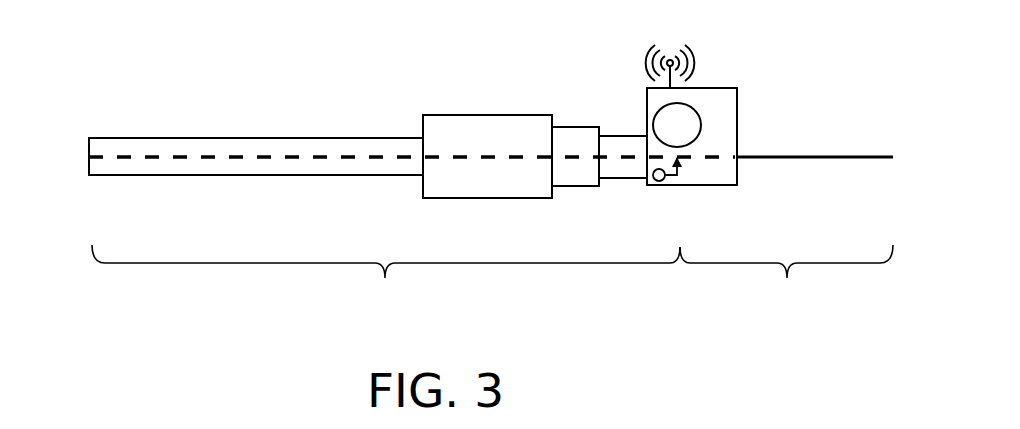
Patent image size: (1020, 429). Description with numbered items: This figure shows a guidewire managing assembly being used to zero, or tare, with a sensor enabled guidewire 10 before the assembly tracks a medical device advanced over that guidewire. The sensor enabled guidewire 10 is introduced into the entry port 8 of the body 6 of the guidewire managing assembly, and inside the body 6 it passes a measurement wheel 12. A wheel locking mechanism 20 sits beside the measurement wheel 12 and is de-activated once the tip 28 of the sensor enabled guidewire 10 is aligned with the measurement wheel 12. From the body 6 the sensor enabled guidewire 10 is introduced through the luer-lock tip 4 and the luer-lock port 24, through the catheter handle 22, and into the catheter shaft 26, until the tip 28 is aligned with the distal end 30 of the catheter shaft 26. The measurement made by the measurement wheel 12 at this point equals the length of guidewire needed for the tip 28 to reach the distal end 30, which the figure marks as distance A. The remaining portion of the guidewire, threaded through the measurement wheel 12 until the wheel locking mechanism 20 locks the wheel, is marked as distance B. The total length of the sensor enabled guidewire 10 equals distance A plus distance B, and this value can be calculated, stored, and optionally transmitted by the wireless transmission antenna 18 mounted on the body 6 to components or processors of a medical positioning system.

The luer-lock tip 4 is at (625, 178).
The body 6 is at (720, 88).
The entry port 8 is at (740, 153).
The sensor enabled guidewire 10 is at (248, 157).
The measurement wheel 12 is at (697, 125).
The wireless transmission antenna 18 is at (670, 55).
The wheel locking mechanism 20 is at (682, 170).
The catheter handle 22 is at (503, 198).
The luer-lock port 24 is at (582, 127).
The catheter shaft 26 is at (305, 137).
The tip 28 is at (89, 127).
The distal end 30 is at (72, 153).
The distance A is at (282, 263).
The distance B is at (813, 263).